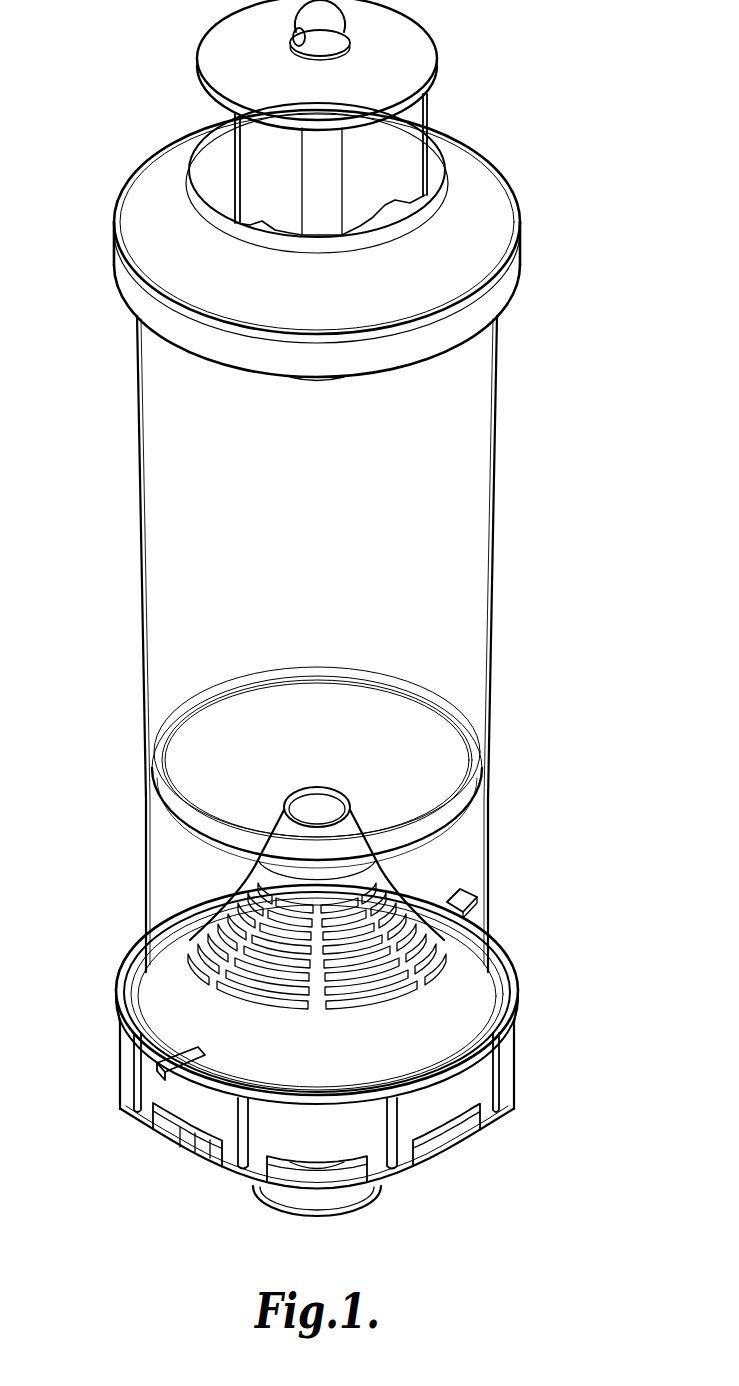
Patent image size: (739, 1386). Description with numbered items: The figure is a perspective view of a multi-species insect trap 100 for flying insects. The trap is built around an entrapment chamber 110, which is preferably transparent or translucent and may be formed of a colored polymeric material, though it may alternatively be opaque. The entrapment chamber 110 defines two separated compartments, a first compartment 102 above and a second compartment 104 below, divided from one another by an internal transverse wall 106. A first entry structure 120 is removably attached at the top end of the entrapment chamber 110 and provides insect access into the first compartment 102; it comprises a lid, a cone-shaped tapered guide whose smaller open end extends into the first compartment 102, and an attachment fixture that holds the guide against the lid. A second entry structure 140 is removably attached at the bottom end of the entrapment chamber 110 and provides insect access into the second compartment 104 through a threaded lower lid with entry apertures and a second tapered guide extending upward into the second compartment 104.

The multi-species insect trap 100 is at (506, 89).
The first entry structure 120 is at (523, 199).
The entrapment chamber 110 is at (497, 427).
The first compartment 102 is at (467, 622).
The internal transverse wall 106 is at (425, 762).
The second compartment 104 is at (466, 868).
The second entry structure 140 is at (516, 1031).